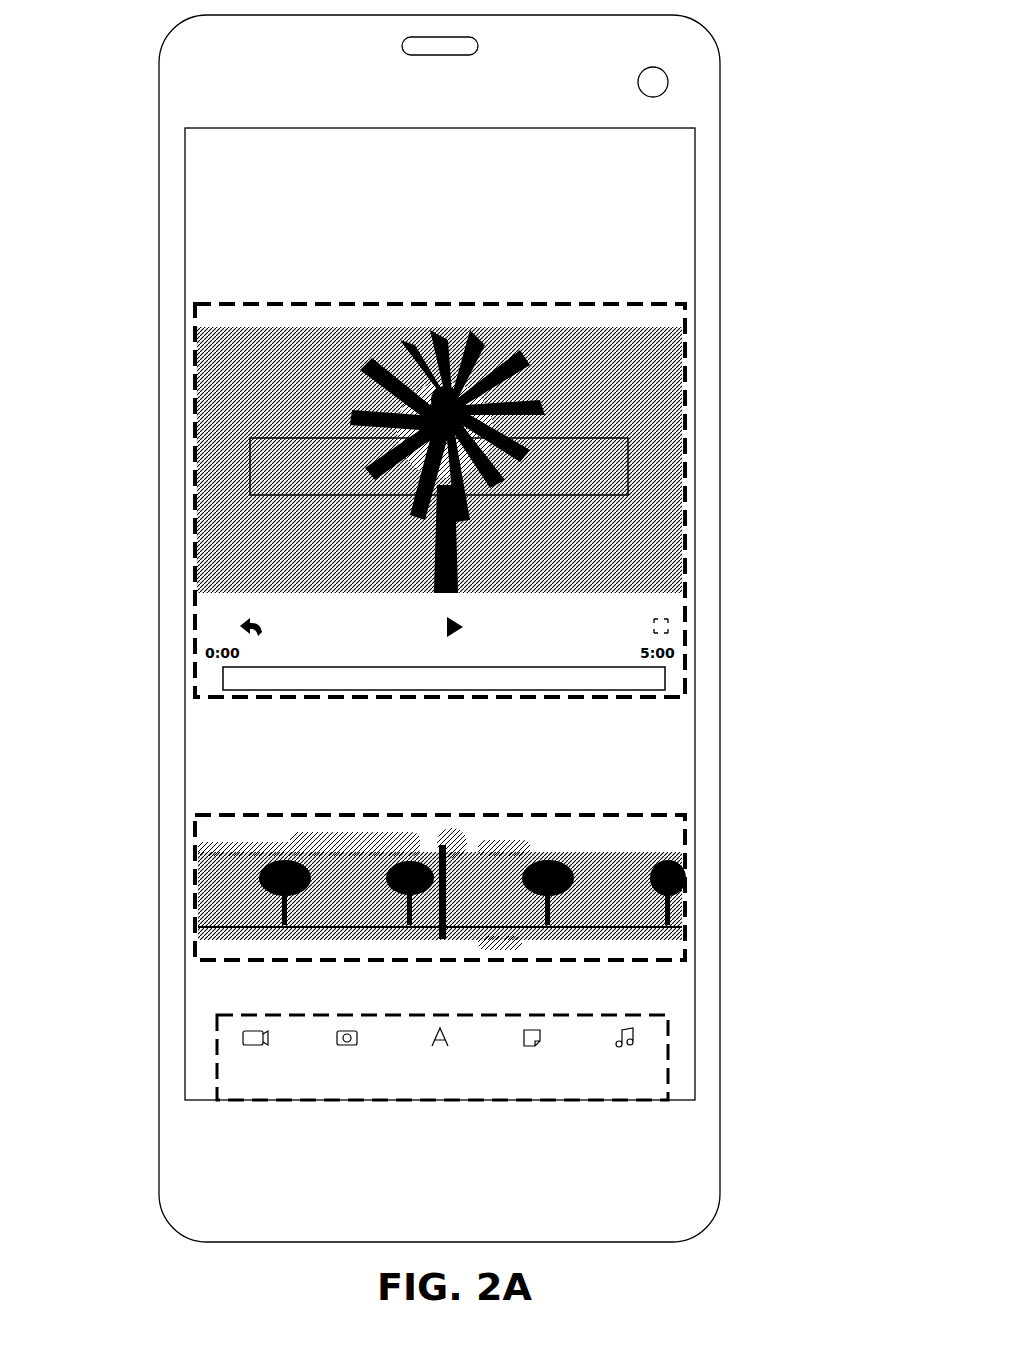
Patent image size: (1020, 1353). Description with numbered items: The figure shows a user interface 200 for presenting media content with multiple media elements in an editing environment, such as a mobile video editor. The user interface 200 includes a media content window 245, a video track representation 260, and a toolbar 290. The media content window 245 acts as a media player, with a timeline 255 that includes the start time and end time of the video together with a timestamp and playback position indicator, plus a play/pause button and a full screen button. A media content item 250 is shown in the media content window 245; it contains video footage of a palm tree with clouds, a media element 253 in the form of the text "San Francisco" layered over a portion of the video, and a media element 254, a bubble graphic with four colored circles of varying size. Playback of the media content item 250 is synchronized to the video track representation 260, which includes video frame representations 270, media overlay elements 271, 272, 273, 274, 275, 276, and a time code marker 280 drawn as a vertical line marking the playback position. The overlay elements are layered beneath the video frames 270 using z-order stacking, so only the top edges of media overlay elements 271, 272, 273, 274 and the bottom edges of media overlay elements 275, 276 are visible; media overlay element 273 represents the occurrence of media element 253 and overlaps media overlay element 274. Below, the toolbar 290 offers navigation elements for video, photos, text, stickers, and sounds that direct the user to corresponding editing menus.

The user interface 200 is at (90, 26).
The media content window 245 is at (345, 302).
The media content item 250 is at (297, 365).
The media element 253 is at (632, 458).
The media element 254 is at (620, 510).
The timeline 255 is at (667, 677).
The video track representation 260 is at (405, 810).
The video frame representations 270 is at (232, 905).
The media overlay element 271 is at (245, 845).
The media overlay element 272 is at (330, 838).
The media overlay element 273 is at (457, 832).
The media overlay element 274 is at (493, 845).
The media overlay element 275 is at (520, 948).
The media overlay element 276 is at (660, 940).
The time code marker 280 is at (437, 944).
The toolbar 290 is at (217, 1062).